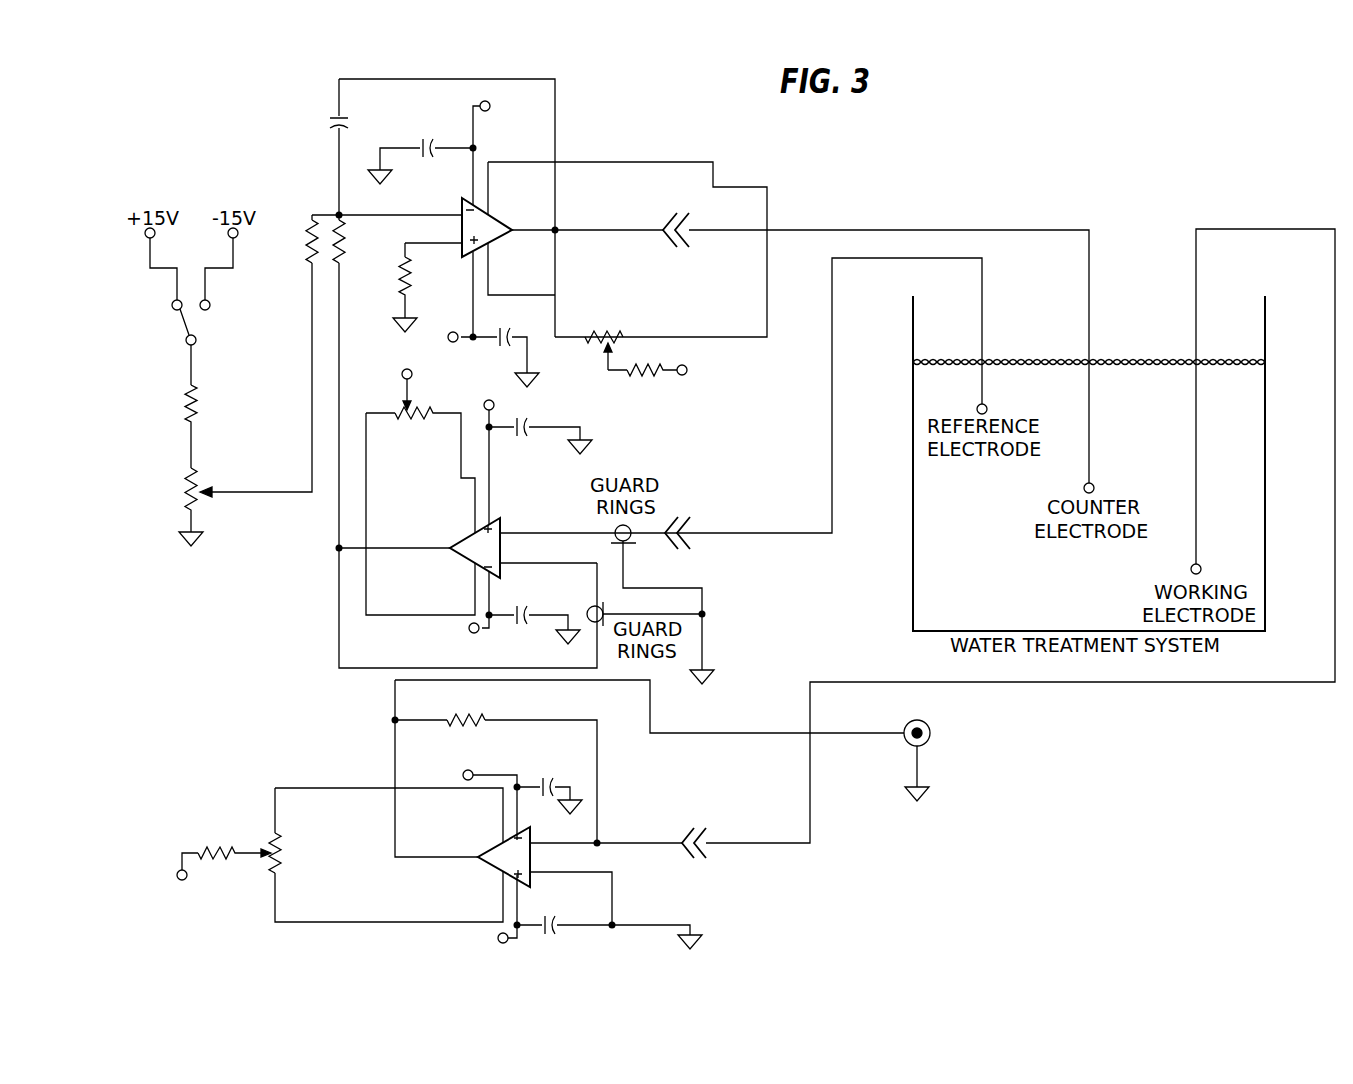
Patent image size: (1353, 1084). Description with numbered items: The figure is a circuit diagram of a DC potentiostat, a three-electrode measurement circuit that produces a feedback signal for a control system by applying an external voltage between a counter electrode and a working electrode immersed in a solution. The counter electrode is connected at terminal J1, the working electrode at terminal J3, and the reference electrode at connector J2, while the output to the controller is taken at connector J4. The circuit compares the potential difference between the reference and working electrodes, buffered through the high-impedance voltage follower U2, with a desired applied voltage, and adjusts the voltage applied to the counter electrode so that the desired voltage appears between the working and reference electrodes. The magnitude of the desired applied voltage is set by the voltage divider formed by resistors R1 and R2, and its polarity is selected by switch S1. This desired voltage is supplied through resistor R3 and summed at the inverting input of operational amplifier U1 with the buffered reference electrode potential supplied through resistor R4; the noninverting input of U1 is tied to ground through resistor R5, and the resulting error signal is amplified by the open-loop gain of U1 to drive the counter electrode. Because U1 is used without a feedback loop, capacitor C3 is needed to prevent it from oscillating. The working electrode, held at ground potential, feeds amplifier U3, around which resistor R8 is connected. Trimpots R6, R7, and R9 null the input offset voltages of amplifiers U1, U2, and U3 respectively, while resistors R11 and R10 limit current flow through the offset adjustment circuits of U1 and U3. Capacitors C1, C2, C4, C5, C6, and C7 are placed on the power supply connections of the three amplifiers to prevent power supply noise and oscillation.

The switch S1 is at (219, 306).
The voltage divider resistor R1 is at (213, 420).
The voltage divider resistor R2 is at (260, 503).
The resistor R3 is at (292, 250).
The resistor R4 is at (357, 252).
The resistor R5 is at (419, 287).
The trimpot R6 is at (643, 328).
The trimpot R7 is at (415, 489).
The resistor R8 is at (472, 717).
The trimpot R9 is at (320, 865).
The resistor R10 is at (214, 851).
The resistor R11 is at (677, 369).
The capacitor C1 is at (420, 154).
The capacitor C2 is at (501, 342).
The capacitor C3 is at (374, 117).
The capacitor C4 is at (527, 451).
The capacitor C5 is at (503, 609).
The capacitor C6 is at (500, 787).
The capacitor C7 is at (577, 918).
The operational amplifier U1 is at (489, 224).
The high-impedance voltage follower U2 is at (455, 546).
The amplifier U3 is at (483, 854).
The terminal J1 is at (677, 242).
The terminal J2 is at (750, 532).
The terminal J3 is at (727, 851).
The output connector J4 is at (1040, 747).